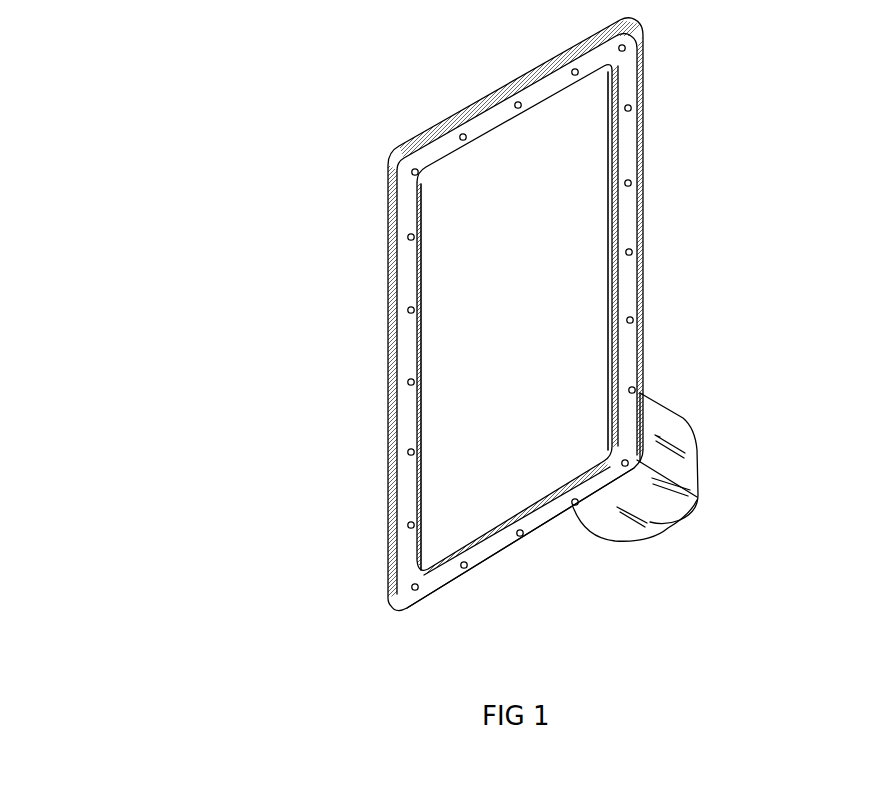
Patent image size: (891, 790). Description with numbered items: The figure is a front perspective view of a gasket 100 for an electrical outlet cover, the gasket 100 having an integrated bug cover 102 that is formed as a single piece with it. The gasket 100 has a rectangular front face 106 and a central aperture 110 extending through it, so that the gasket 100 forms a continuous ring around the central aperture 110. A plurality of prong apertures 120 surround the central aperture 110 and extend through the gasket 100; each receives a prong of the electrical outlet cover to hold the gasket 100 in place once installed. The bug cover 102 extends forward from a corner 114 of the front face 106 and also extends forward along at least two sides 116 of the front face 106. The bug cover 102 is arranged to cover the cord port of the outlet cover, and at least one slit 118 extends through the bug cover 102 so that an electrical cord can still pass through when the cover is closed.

The gasket 100 is at (264, 160).
The bug cover 102 is at (662, 417).
The front face 106 is at (400, 210).
The central aperture 110 is at (465, 308).
The corner 114 is at (628, 472).
The sides 116 is at (644, 288).
The slit 118 is at (673, 523).
The prong apertures 120 is at (633, 252).